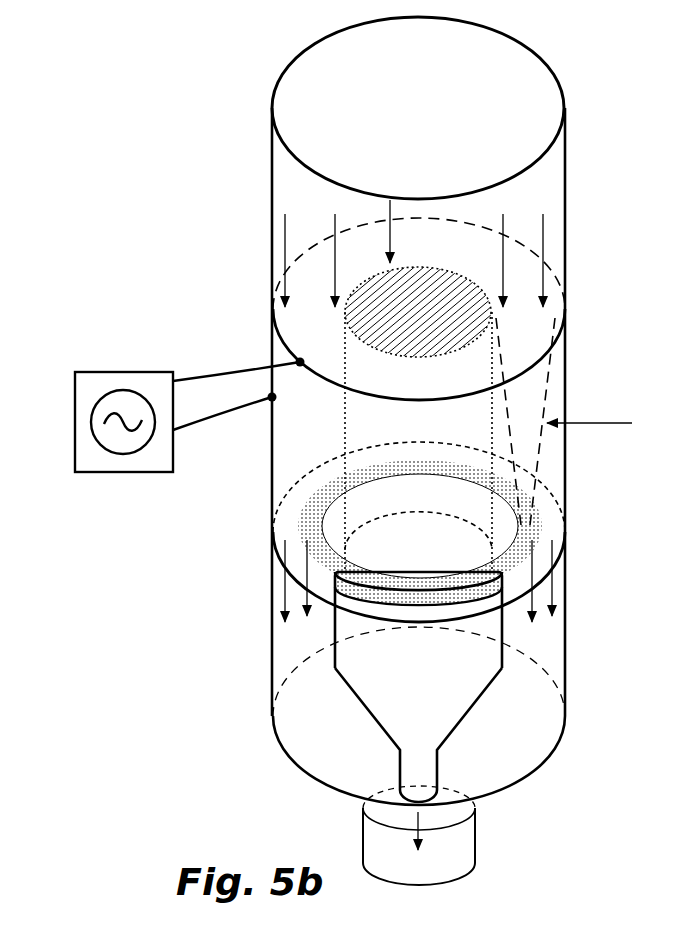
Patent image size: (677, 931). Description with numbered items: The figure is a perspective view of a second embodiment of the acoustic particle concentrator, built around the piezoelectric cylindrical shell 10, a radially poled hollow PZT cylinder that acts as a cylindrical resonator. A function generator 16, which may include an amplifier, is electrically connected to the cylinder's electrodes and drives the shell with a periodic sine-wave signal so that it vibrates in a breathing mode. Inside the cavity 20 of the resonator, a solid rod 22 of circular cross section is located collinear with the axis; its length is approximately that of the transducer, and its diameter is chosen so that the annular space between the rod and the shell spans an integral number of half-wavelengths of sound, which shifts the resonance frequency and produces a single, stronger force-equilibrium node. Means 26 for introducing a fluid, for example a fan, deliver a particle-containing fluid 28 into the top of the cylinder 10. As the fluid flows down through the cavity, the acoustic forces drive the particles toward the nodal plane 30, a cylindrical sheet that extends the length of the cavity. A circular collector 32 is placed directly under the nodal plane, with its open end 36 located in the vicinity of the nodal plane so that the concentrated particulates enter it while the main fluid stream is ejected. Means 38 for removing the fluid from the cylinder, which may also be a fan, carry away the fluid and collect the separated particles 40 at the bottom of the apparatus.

The piezoelectric cylindrical shell 10 is at (426, 411).
The function generator 16 is at (125, 475).
The cavity 20 is at (303, 322).
The solid rod 22 is at (342, 418).
The means for introducing a fluid 26 is at (567, 192).
The fluid 28 is at (418, 312).
The nodal plane 30 is at (522, 556).
The circular collector 32 is at (363, 667).
The open end 36 is at (370, 590).
The means for removing the fluid 38 is at (568, 628).
The separated particles 40 is at (478, 845).